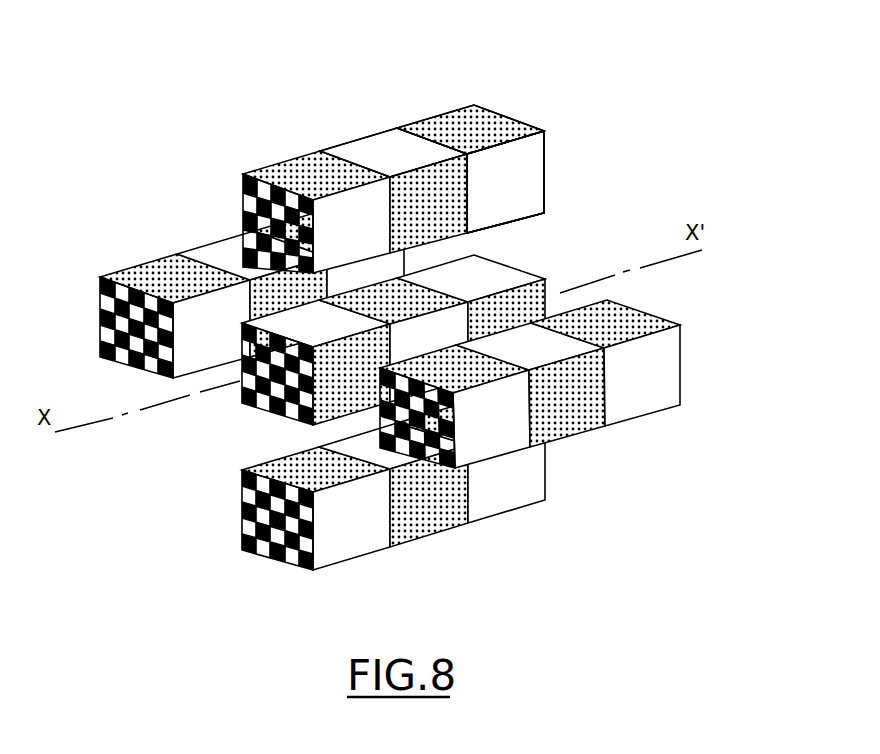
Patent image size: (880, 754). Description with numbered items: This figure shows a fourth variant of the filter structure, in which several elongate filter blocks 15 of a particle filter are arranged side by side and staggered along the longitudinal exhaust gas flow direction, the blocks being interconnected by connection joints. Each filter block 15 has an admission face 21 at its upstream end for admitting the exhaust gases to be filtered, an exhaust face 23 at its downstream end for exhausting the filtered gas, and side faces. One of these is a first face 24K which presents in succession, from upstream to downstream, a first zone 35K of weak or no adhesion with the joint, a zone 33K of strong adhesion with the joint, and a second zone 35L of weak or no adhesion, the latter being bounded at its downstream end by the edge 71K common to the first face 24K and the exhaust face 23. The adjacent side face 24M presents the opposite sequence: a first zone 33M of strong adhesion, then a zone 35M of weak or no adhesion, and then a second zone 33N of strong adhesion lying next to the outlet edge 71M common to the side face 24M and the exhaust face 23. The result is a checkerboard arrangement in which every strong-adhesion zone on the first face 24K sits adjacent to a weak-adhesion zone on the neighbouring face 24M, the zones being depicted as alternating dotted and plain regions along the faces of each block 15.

The filter block 15 is at (483, 74).
The admission face 21 is at (242, 192).
The exhaust face 23 is at (546, 156).
The first face 24K is at (372, 112).
The side face 24M is at (632, 160).
The zone of strong adhesion 33K is at (358, 148).
The first zone of strong adhesion 33M is at (378, 239).
The second zone of strong adhesion 33N is at (528, 197).
The first zone of weak or no adhesion 35K is at (281, 170).
The second zone of weak or no adhesion 35L is at (437, 118).
The zone of weak or no adhesion 35M is at (427, 208).
The edge 71K is at (502, 116).
The outlet edge 71M is at (546, 197).